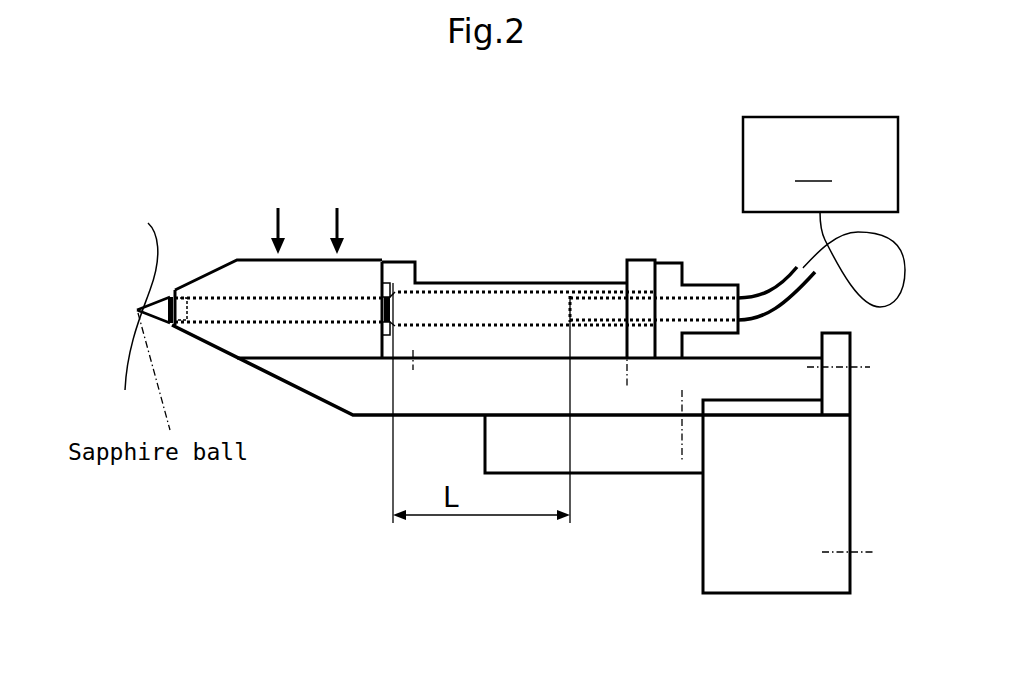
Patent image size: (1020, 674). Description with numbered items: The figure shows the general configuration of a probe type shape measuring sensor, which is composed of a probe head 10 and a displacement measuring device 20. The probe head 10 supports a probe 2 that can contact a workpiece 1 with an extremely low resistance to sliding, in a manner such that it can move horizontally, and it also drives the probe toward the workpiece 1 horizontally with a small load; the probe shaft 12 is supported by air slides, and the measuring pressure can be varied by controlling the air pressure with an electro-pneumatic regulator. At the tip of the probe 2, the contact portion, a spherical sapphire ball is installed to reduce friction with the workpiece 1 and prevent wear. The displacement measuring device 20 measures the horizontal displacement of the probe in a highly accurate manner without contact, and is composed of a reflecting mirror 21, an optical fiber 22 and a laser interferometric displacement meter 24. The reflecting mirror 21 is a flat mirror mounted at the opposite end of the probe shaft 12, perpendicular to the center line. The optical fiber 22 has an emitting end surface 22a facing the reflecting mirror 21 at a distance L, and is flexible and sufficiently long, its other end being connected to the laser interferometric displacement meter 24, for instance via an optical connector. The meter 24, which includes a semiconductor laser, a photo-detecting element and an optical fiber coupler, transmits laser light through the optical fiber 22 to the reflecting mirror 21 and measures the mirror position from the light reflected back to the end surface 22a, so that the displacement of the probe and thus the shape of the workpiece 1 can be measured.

The workpiece 1 is at (152, 258).
The probe 2 is at (160, 303).
The probe head 10 is at (282, 337).
The probe shaft 12 is at (347, 290).
The displacement measuring device 20 is at (665, 210).
The reflecting mirror 21 is at (405, 292).
The optical fiber 22 is at (797, 282).
The emitting end surface 22a is at (570, 297).
The laser interferometric displacement meter 24 is at (824, 212).